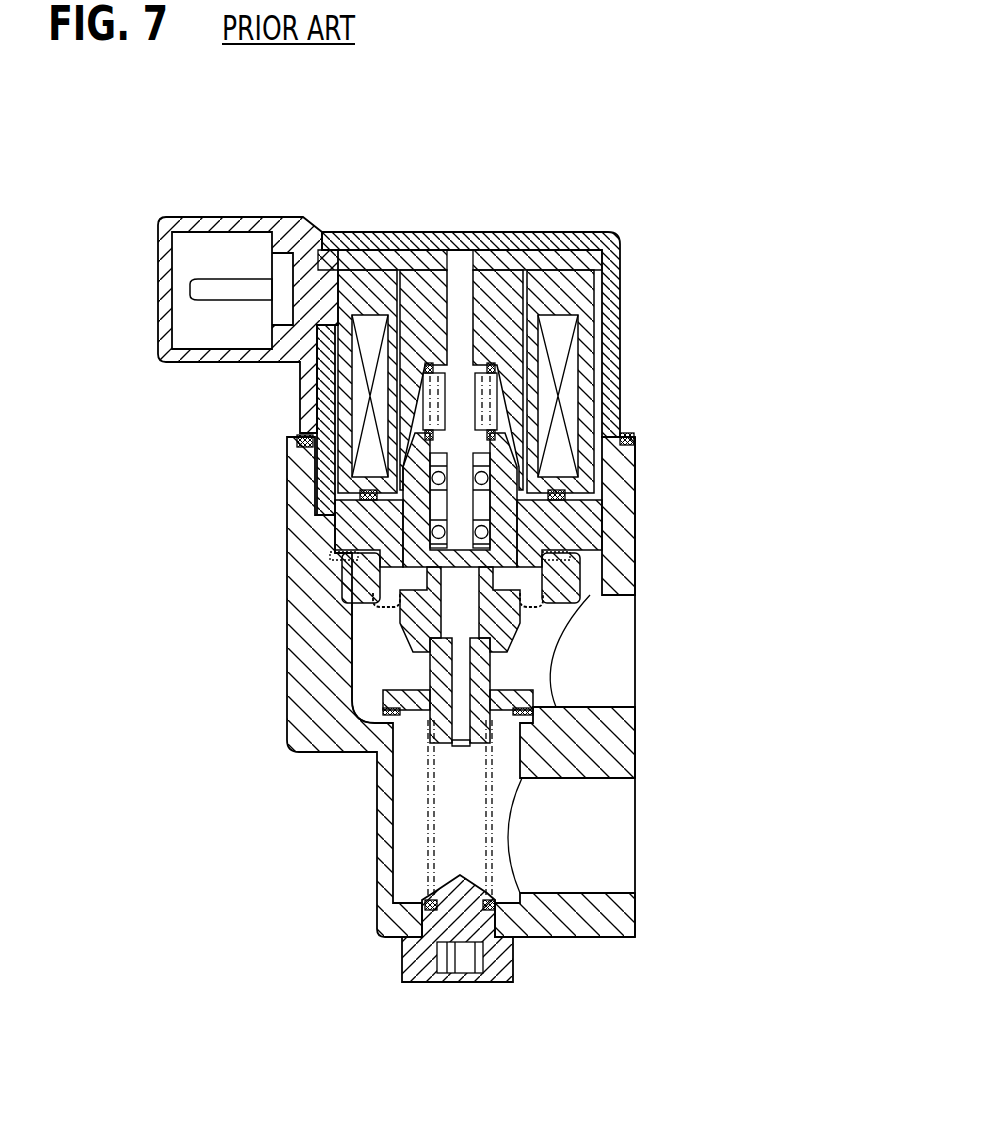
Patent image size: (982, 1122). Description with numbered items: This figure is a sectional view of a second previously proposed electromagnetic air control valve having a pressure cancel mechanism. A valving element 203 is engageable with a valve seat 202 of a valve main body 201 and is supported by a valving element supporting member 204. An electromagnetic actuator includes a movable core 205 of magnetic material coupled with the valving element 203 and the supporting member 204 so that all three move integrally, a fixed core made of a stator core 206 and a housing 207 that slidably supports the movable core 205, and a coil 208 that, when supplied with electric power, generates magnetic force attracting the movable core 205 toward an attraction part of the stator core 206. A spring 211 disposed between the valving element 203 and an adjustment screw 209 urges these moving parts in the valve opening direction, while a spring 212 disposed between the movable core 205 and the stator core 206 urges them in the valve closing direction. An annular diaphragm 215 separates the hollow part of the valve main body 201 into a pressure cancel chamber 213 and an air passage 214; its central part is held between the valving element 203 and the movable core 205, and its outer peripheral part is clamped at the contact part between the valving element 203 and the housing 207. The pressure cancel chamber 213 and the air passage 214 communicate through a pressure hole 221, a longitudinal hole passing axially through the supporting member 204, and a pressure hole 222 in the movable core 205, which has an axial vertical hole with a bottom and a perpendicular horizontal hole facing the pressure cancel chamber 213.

The valve main body 201 is at (288, 745).
The valve seat 202 is at (387, 710).
The valving element 203 is at (525, 733).
The valving element supporting member 204 is at (482, 675).
The movable core 205 is at (512, 520).
The stator core 206 is at (492, 270).
The housing 207 is at (612, 377).
The coil 208 is at (550, 343).
The adjustment screw 209 is at (444, 925).
The spring 211 is at (425, 893).
The spring 212 is at (305, 437).
The pressure cancel chamber 213 is at (545, 577).
The air passage 214 is at (380, 665).
The annular diaphragm 215 is at (387, 607).
The pressure hole 221 is at (452, 760).
The pressure hole 222 is at (440, 577).